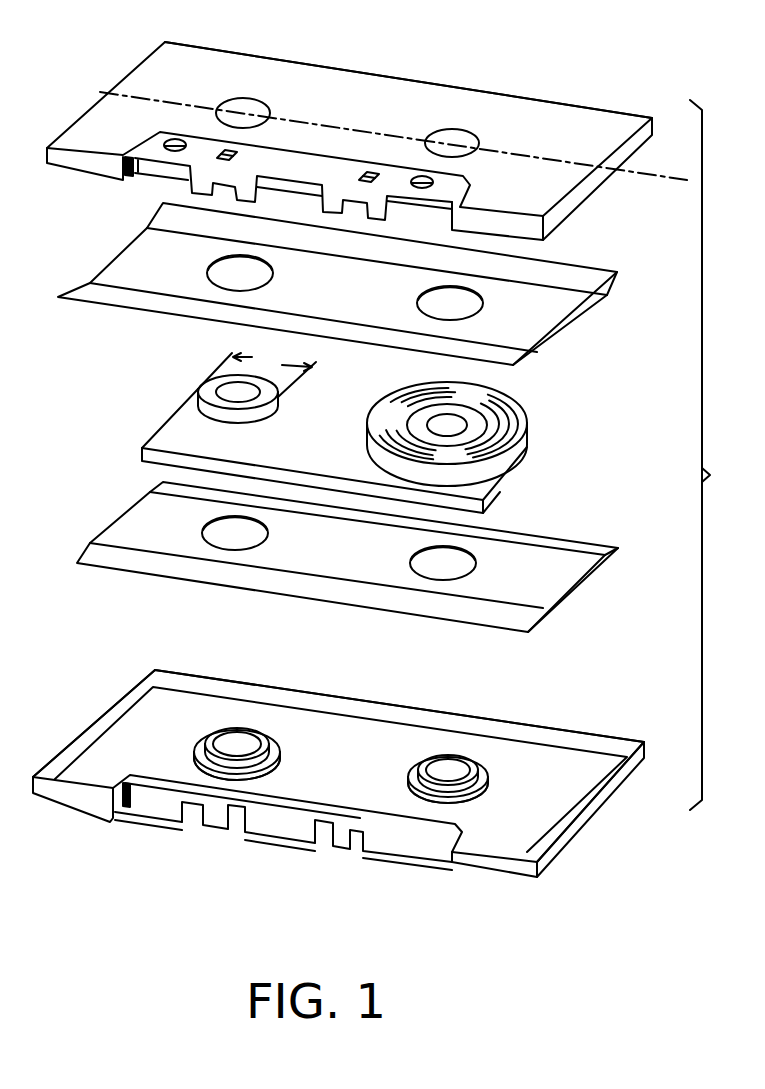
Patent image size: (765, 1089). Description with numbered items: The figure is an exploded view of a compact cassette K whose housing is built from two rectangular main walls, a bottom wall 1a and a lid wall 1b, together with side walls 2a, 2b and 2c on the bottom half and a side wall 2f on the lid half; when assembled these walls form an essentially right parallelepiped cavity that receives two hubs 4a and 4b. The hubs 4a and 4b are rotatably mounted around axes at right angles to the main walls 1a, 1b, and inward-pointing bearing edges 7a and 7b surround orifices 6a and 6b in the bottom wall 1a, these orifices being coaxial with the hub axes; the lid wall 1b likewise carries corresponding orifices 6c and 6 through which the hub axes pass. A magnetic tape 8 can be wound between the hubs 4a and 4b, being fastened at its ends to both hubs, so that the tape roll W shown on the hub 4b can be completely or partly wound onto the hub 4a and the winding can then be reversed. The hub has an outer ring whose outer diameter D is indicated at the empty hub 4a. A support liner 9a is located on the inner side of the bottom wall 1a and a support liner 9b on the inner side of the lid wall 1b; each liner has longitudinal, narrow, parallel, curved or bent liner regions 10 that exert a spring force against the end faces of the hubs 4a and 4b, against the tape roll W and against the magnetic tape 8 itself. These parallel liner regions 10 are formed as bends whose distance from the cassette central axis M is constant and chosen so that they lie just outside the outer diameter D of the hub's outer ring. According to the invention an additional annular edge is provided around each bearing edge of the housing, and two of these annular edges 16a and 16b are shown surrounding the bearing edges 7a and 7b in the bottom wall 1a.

The bottom wall 1a is at (358, 781).
The lid wall 1b is at (364, 117).
The side wall 2a is at (104, 720).
The side wall 2b is at (598, 788).
The side wall 2c is at (358, 706).
The side wall 2f is at (363, 76).
The hub 4a is at (205, 388).
The hub 4b is at (473, 427).
The orifice 6 is at (458, 142).
The orifice 6a is at (252, 741).
The orifice 6b is at (480, 775).
The orifice 6c is at (247, 108).
The bearing edge 7a is at (237, 730).
The bearing edge 7b is at (448, 760).
The magnetic tape 8 is at (275, 477).
The support liner 9a is at (347, 300).
The support liner 9b is at (350, 563).
The liner region 10 is at (610, 294).
The annular edge 16a is at (233, 766).
The annular edge 16b is at (448, 793).
The outer diameter D is at (257, 371).
The tape roll W is at (503, 442).
The compact cassette K is at (568, 411).
The cassette central axis M is at (670, 178).